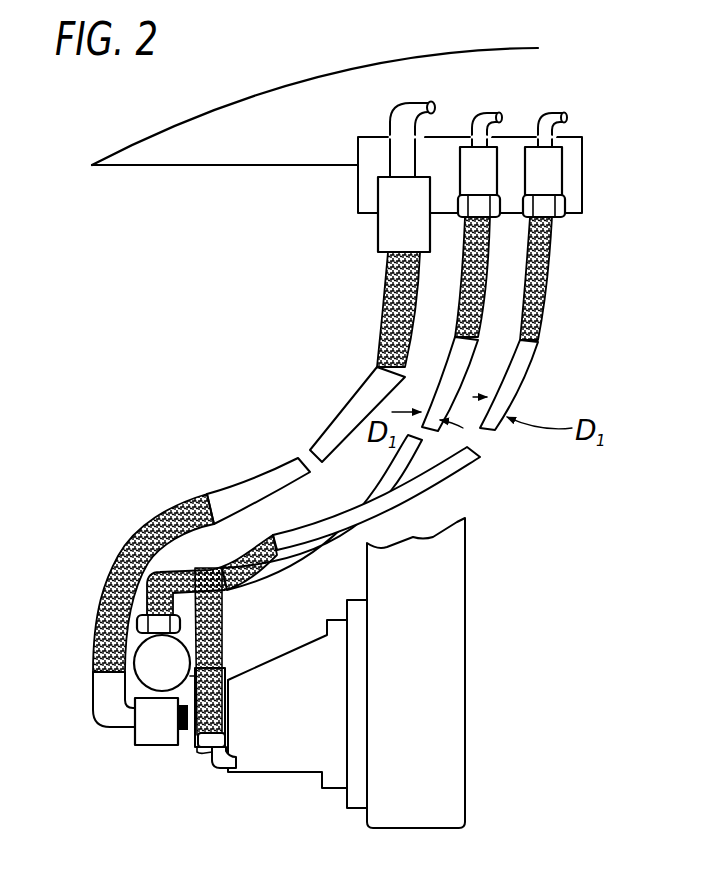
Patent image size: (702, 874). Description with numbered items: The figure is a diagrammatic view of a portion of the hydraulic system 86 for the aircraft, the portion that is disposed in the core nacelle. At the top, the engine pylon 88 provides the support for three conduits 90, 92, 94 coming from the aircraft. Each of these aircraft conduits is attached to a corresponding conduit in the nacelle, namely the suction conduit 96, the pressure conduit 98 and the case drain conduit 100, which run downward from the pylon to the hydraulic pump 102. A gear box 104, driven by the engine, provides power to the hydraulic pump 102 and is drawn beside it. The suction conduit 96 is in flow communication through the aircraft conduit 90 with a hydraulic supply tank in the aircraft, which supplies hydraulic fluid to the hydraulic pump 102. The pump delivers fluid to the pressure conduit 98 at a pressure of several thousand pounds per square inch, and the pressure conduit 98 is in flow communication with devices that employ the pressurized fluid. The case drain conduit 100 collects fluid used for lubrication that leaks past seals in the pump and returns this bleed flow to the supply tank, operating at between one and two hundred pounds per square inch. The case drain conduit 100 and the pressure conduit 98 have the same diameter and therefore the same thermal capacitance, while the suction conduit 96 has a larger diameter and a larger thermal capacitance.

The hydraulic system 86 is at (322, 492).
The engine pylon 88 is at (243, 152).
The aircraft conduit 90 is at (416, 108).
The aircraft conduit 92 is at (503, 110).
The aircraft conduit 94 is at (560, 82).
The suction conduit 96 is at (205, 343).
The pressure conduit 98 is at (450, 370).
The case drain conduit 100 is at (513, 364).
The hydraulic pump 102 is at (293, 733).
The gear box 104 is at (420, 705).